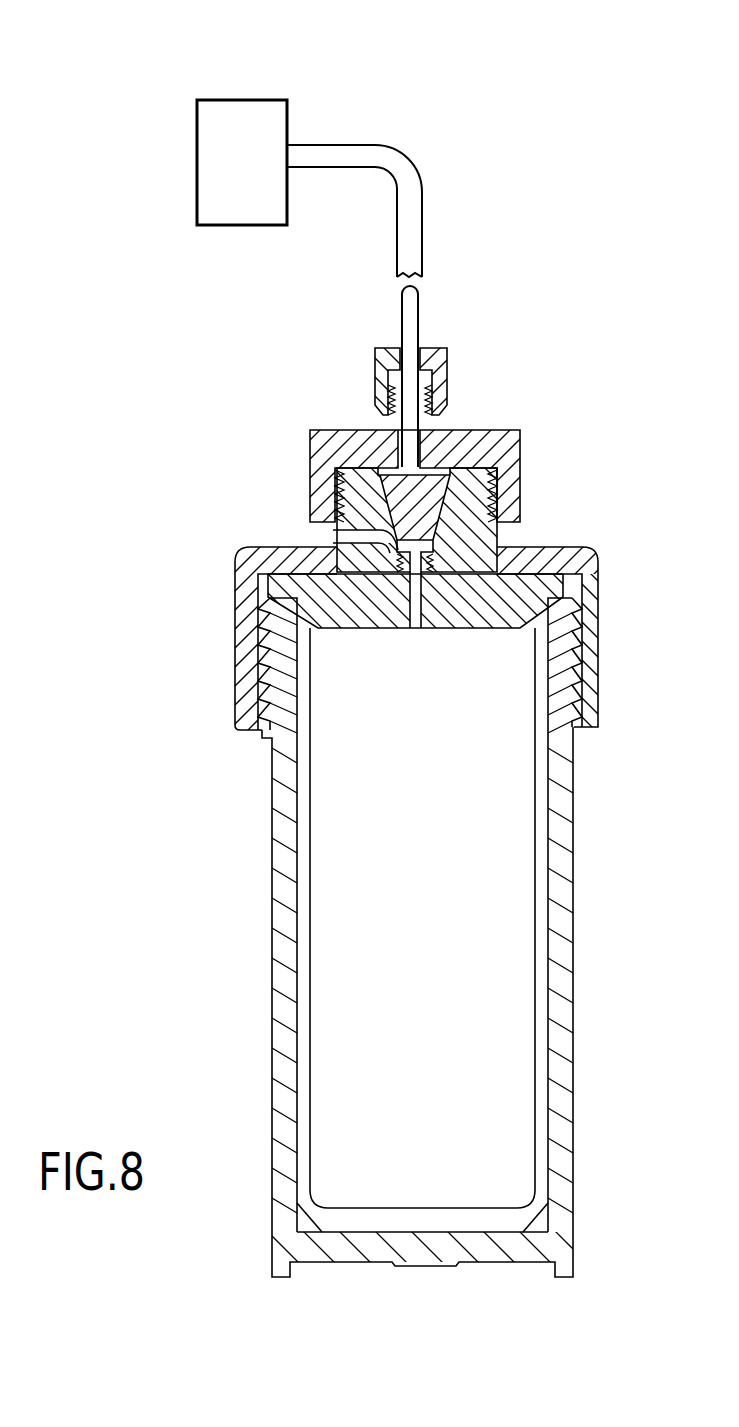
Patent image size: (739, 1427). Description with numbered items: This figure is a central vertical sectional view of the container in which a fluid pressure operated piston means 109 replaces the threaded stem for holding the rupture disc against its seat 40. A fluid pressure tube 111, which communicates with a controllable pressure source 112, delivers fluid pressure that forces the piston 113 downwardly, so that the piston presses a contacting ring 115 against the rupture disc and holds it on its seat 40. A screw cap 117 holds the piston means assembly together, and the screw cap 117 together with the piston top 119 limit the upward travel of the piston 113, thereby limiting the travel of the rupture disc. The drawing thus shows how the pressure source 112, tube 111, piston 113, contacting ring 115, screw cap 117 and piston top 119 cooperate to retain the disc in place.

The controllable pressure source 112 is at (290, 112).
The fluid pressure tube 111 is at (418, 303).
The piston means 109 is at (470, 380).
The piston top 119 is at (393, 467).
The screw cap 117 is at (480, 428).
The piston 113 is at (452, 508).
The contacting ring 115 is at (332, 536).
The seat 40 is at (393, 585).